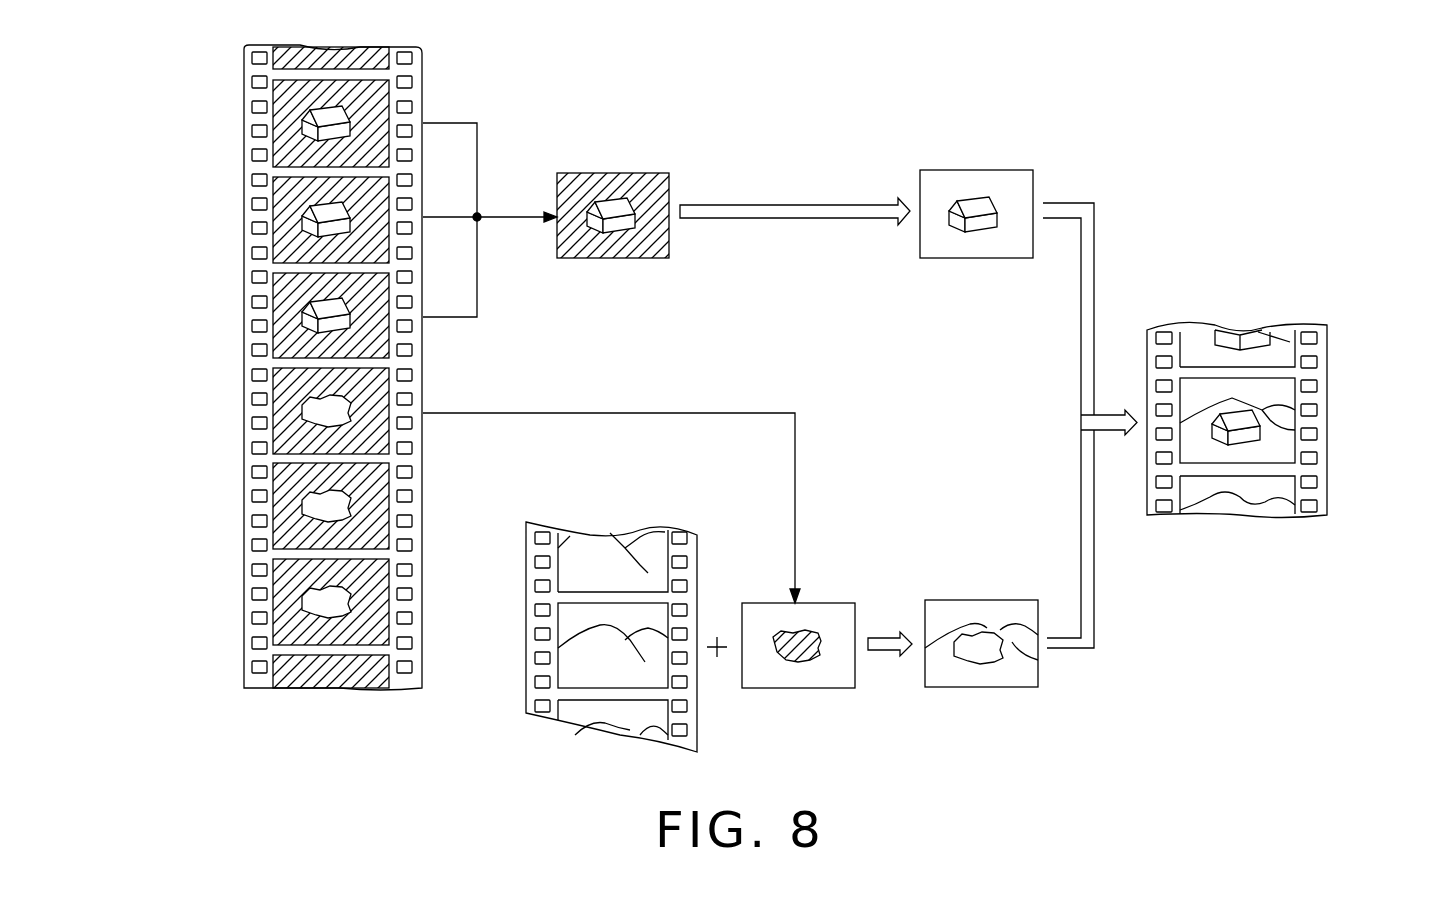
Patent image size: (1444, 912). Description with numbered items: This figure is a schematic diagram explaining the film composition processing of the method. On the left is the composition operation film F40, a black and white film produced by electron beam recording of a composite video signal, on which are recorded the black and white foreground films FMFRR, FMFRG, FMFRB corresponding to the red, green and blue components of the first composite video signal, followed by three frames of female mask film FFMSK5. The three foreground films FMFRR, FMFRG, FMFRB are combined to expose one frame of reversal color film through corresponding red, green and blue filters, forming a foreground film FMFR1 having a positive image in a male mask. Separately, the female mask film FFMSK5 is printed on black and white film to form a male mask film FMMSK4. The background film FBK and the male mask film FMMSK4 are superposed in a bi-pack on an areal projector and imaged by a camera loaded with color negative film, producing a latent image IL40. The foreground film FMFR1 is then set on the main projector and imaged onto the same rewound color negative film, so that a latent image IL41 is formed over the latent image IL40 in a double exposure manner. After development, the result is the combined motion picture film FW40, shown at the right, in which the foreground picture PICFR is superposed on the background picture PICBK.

The composition operation film F40 is at (422, 87).
The black and white foreground film (red component) FMFRR is at (275, 103).
The black and white foreground film (green component) FMFRG is at (275, 197).
The black and white foreground film (blue component) FMFRB is at (275, 290).
The female mask film FFMSK5 is at (275, 405).
The foreground film FMFR1 is at (660, 173).
The latent image IL41 is at (978, 248).
The background film FBK is at (650, 717).
The male mask film FMMSK4 is at (783, 677).
The latent image IL40 is at (990, 687).
The combined motion picture film FW40 is at (1325, 496).
The background picture PICBK is at (1280, 390).
The foreground picture PICFR is at (1262, 434).